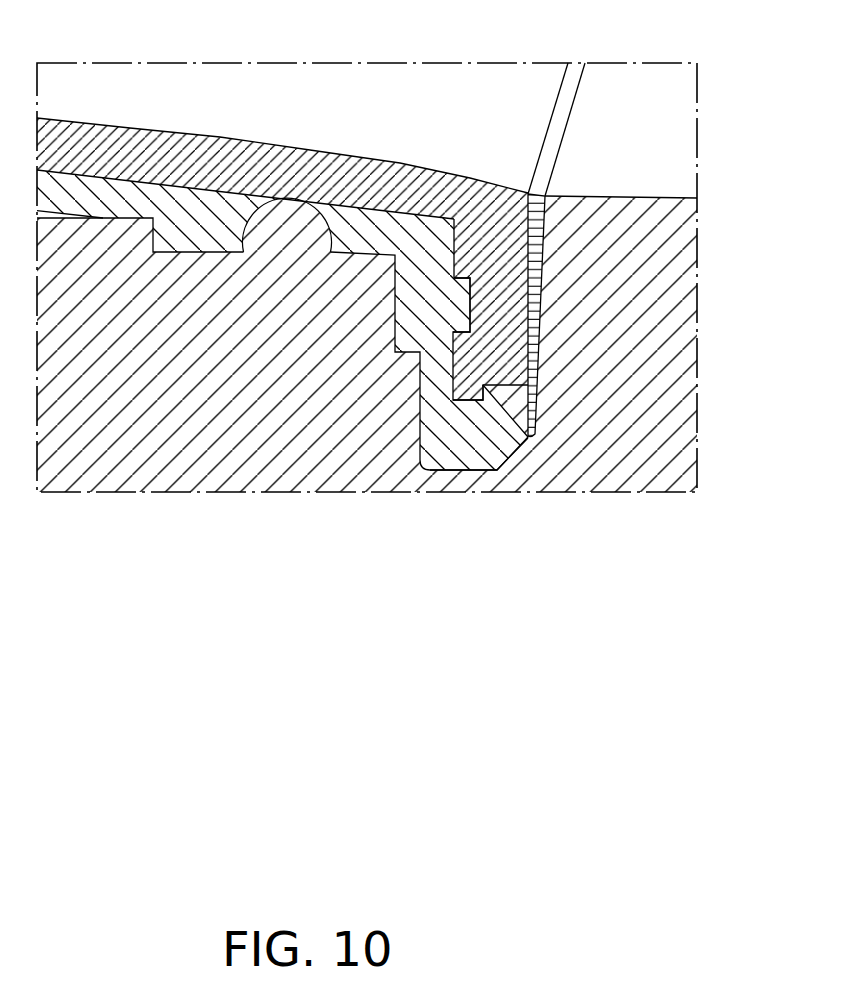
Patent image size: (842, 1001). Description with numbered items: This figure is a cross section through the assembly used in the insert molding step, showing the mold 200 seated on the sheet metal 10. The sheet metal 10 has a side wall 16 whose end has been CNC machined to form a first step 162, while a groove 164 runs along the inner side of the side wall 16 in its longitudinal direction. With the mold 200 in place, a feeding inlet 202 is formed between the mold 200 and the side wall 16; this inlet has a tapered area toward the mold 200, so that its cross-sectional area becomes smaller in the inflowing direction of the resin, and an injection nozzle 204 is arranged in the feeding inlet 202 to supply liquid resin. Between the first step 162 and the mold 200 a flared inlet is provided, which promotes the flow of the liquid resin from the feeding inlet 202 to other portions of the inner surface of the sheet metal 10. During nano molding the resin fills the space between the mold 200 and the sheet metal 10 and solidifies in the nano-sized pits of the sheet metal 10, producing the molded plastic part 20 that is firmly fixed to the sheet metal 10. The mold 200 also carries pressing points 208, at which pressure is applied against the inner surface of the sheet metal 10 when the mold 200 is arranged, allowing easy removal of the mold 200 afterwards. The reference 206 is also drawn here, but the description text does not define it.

The sheet metal 10 is at (314, 167).
The side wall 16 is at (495, 243).
The first step 162 is at (491, 411).
The groove 164 is at (458, 308).
The molded plastic part 20 is at (169, 195).
The mold 200 is at (197, 448).
The feeding inlet 202 is at (546, 305).
The injection nozzle 204 is at (574, 122).
The groove of base 206 is at (470, 439).
The pressing point 208 is at (292, 225).